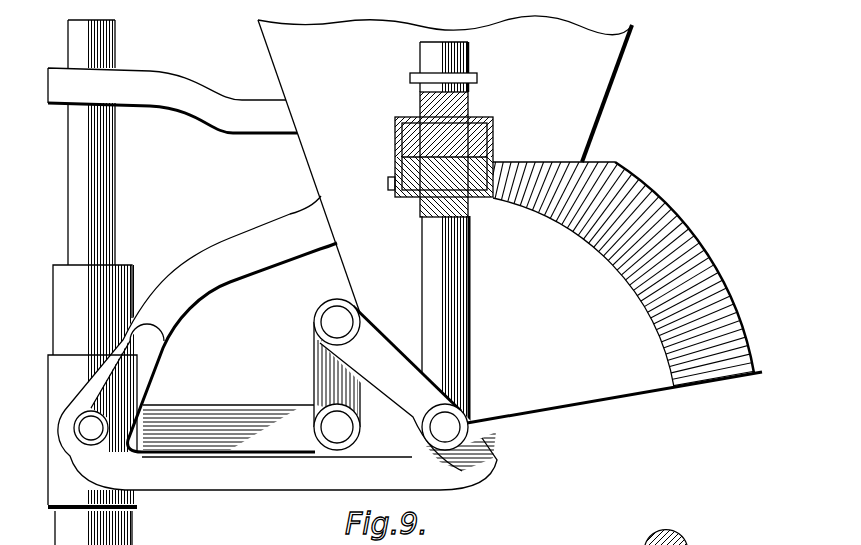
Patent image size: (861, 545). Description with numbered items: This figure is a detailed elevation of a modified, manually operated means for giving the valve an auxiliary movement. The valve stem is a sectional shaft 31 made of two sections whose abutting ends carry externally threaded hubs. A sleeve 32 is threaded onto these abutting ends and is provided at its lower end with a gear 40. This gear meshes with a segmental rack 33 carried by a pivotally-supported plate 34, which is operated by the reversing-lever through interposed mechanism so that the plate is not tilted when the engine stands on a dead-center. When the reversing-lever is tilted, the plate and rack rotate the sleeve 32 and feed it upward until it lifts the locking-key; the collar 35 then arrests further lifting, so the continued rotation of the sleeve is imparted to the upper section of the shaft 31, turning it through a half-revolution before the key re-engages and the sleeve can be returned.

The sectional shaft 31 is at (445, 164).
The sleeve 32 is at (494, 137).
The segmental rack 33 is at (697, 257).
The pivotally-supported plate 34 is at (616, 386).
The collar 35 is at (478, 78).
The gear 40 is at (505, 205).